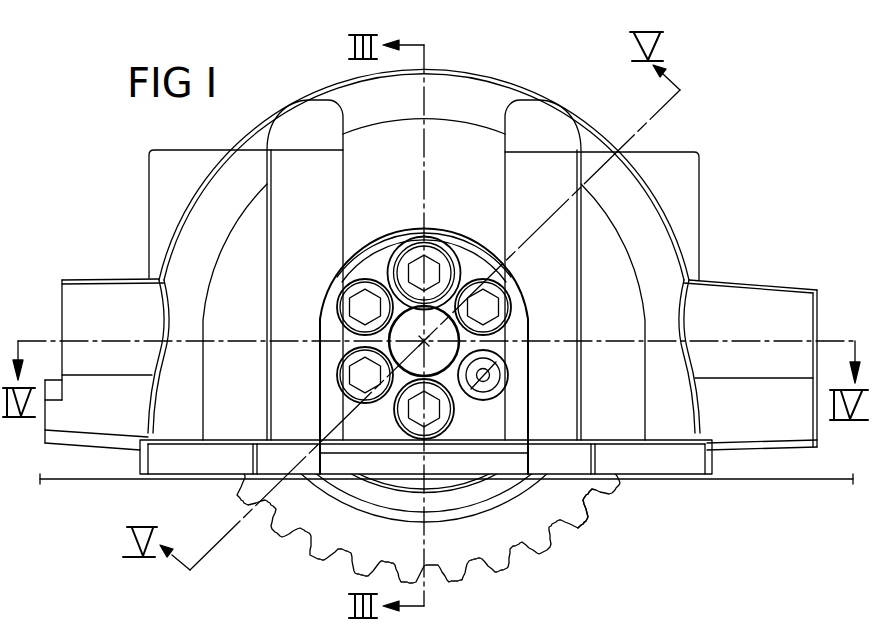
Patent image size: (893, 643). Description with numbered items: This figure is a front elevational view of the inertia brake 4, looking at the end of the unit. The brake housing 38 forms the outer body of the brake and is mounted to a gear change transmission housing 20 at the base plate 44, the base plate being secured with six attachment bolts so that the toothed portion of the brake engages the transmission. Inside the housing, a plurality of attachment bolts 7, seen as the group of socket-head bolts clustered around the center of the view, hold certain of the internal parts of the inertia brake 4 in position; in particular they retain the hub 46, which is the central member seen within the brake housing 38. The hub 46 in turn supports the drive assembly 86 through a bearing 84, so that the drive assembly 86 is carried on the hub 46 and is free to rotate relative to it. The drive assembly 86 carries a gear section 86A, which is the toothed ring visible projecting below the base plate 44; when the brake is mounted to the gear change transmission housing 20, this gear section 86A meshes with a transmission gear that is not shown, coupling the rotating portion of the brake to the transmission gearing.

The inertia brake 4 is at (518, 60).
The attachment bolts 7 is at (365, 304).
The gear change transmission housing 20 is at (752, 518).
The brake housing 38 is at (245, 163).
The base plate 44 is at (203, 463).
The hub 46 is at (433, 476).
The bearing 84 is at (485, 493).
The drive assembly 86 is at (326, 517).
The gear section 86A is at (602, 500).